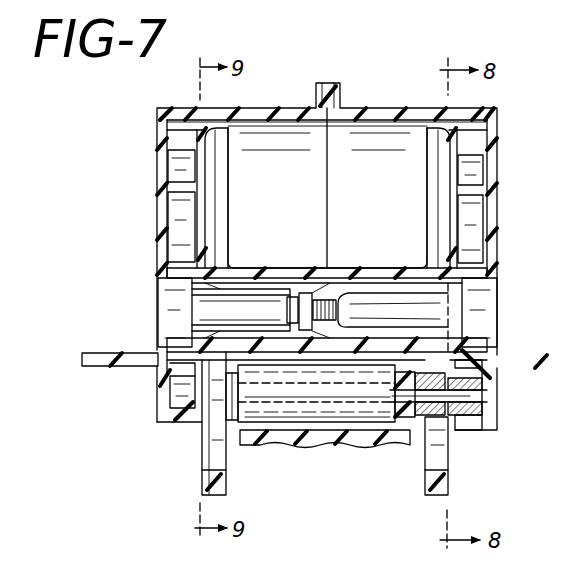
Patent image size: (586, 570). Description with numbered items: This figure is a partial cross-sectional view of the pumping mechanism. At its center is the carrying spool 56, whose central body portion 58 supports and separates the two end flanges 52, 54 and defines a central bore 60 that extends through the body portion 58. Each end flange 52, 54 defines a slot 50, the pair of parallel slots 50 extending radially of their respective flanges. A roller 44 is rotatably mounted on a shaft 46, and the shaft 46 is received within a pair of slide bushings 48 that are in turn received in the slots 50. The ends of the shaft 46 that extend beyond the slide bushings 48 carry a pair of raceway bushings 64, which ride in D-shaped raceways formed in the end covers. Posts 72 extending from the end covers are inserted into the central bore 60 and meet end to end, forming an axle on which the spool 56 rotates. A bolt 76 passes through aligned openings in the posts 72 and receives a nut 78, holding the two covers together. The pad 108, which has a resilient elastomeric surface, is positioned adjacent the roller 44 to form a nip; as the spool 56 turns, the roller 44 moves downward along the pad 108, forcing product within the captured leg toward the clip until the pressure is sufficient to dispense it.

The roller 44 is at (350, 413).
The shaft 46 is at (500, 393).
The slide bushings 48 is at (233, 417).
The slots 50 is at (208, 465).
The end flange 52 is at (237, 160).
The end flange 54 is at (425, 157).
The carrying spool 56 is at (362, 262).
The central body portion 58 is at (263, 265).
The central bore 60 is at (197, 322).
The raceway bushings 64 is at (163, 407).
The posts 72 is at (195, 285).
The bolt 76 is at (378, 308).
The nut 78 is at (288, 308).
The pad 108 is at (310, 443).